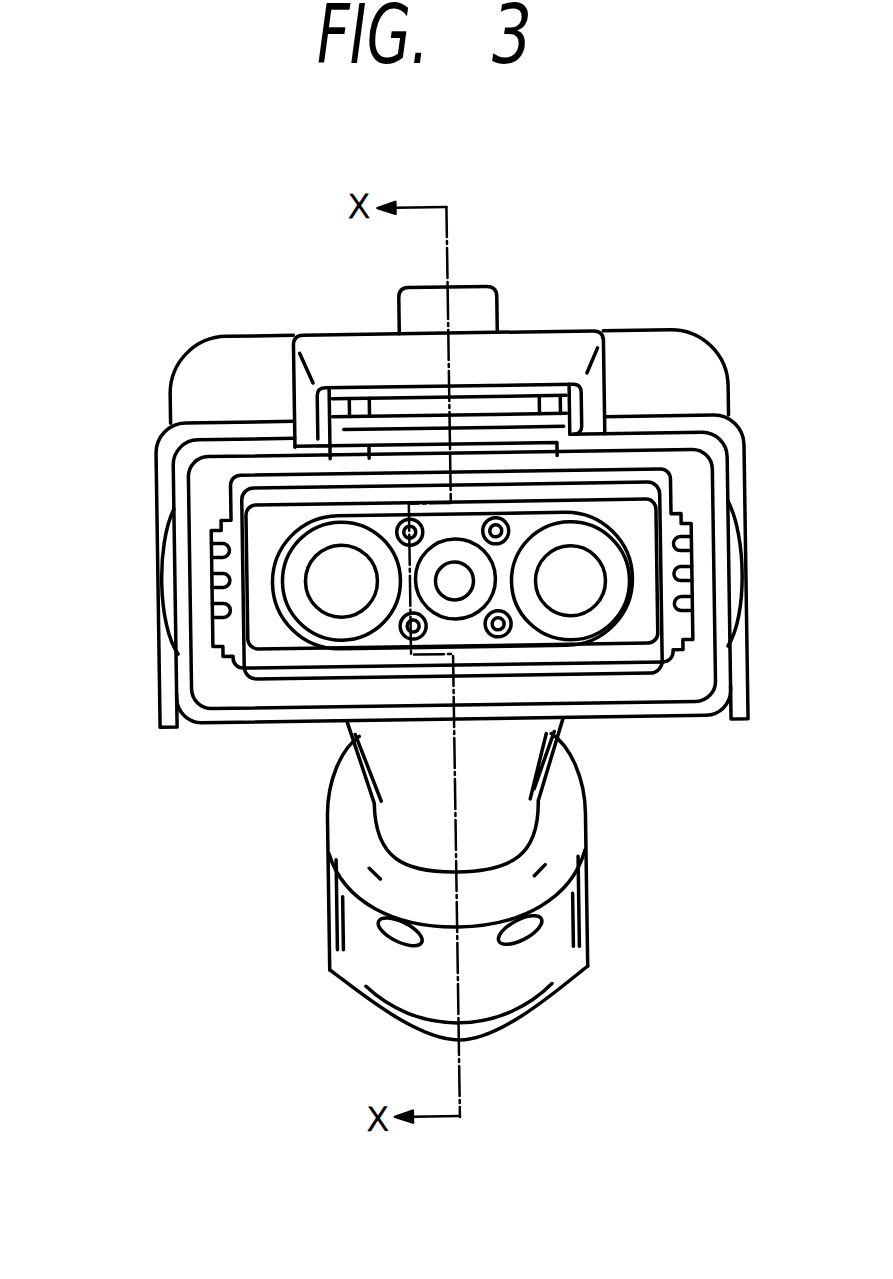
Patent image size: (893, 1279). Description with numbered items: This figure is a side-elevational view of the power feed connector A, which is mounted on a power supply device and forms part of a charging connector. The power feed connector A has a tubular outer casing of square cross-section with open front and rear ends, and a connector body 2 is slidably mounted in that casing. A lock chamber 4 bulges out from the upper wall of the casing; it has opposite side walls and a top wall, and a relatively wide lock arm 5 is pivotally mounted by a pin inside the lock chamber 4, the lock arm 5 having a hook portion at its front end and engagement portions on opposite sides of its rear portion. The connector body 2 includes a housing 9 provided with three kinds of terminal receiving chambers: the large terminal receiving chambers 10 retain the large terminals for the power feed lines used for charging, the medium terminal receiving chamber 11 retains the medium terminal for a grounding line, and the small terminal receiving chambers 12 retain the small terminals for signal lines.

The power feed connector A is at (670, 283).
The connector body 2 is at (632, 681).
The lock chamber 4 is at (528, 328).
The lock arm 5 is at (400, 419).
The housing 9 is at (702, 717).
The large terminal receiving chambers 10 is at (321, 578).
The medium terminal receiving chamber 11 is at (456, 584).
The small terminal receiving chambers 12 is at (400, 626).